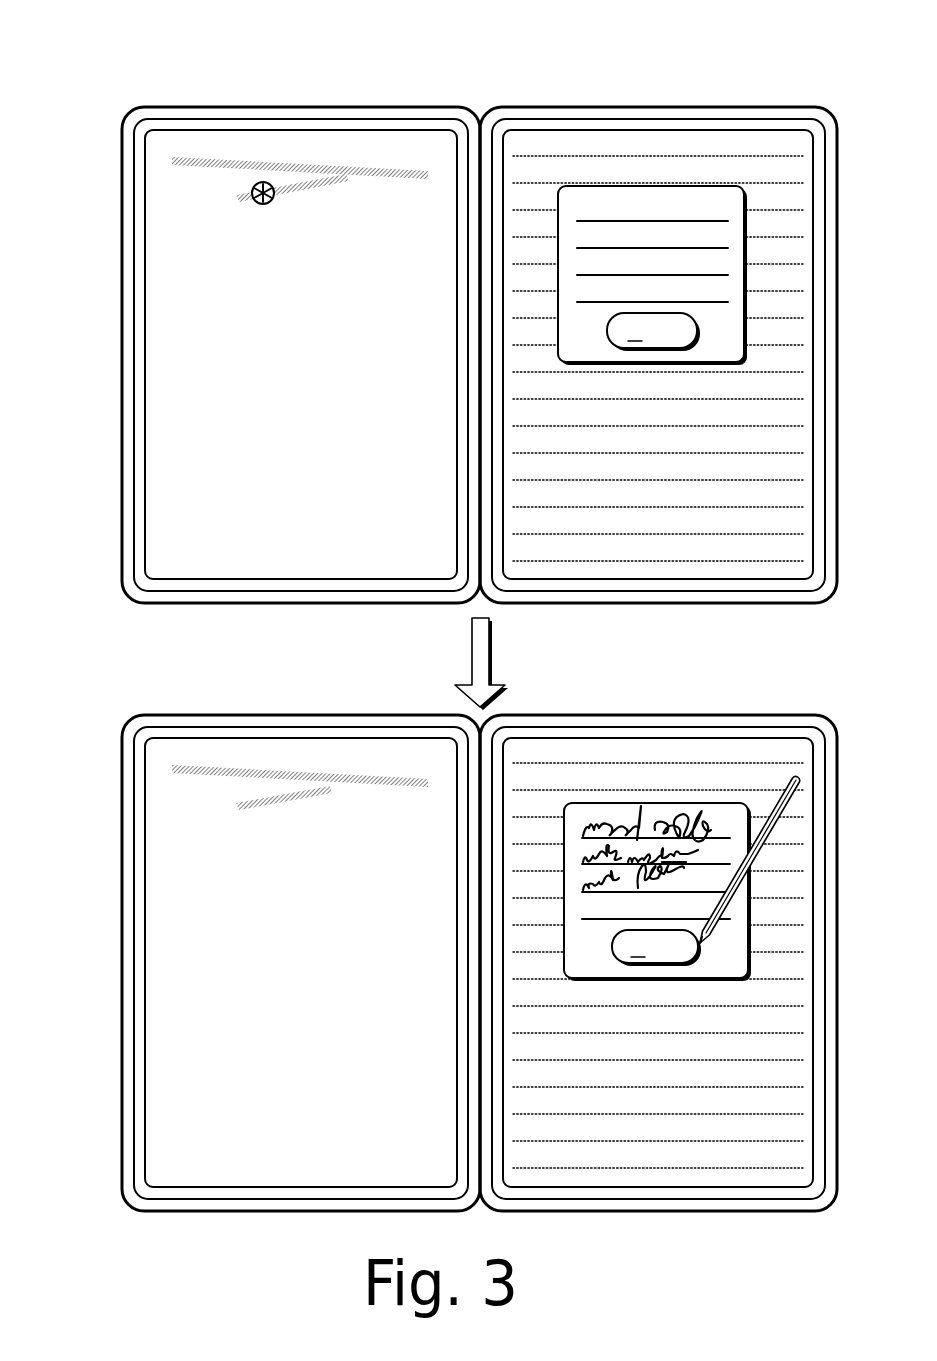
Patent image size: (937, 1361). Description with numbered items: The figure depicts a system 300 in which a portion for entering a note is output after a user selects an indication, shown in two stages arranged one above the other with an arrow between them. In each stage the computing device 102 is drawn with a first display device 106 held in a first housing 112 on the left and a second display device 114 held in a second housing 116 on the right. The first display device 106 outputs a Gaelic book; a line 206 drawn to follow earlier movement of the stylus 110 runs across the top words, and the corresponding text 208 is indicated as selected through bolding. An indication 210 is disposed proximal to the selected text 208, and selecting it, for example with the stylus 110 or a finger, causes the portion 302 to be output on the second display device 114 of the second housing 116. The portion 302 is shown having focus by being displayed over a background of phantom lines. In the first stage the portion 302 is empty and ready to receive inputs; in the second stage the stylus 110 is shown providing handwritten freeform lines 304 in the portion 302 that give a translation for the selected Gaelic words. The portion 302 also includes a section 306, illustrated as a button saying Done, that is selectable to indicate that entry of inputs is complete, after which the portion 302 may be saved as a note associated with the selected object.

The system 300 is at (117, 53).
The computing device 102 is at (130, 121).
The first display device 106 is at (252, 130).
The first housing 112 is at (365, 107).
The second display device 114 is at (520, 128).
The second housing 116 is at (619, 107).
The line 206 is at (258, 165).
The text 208 is at (372, 178).
The indication 210 is at (275, 203).
The portion 302 is at (110, 206).
The handwritten freeform lines 304 is at (110, 821).
The section 306 is at (655, 965).
The stylus 110 is at (790, 781).